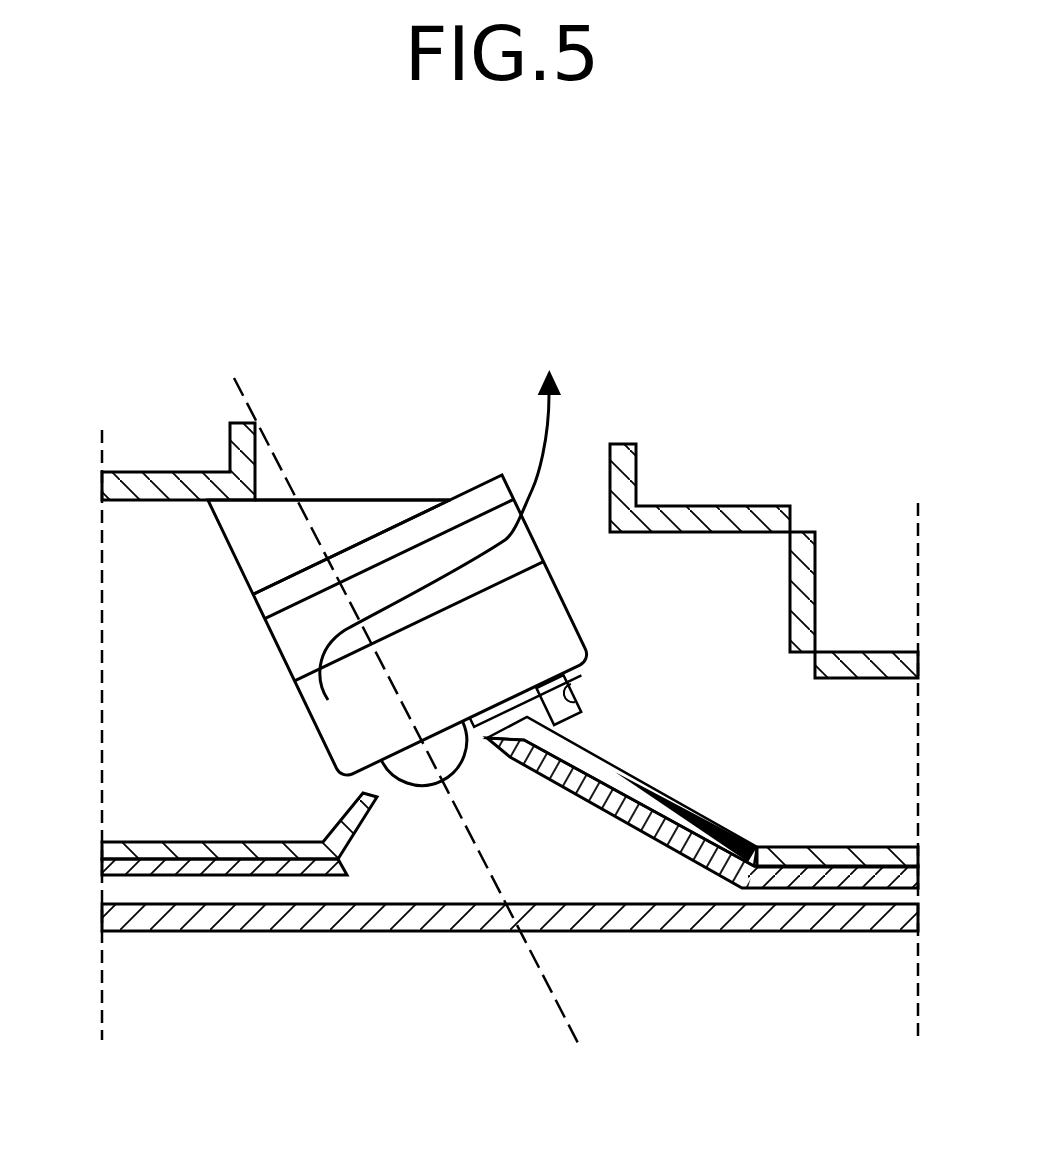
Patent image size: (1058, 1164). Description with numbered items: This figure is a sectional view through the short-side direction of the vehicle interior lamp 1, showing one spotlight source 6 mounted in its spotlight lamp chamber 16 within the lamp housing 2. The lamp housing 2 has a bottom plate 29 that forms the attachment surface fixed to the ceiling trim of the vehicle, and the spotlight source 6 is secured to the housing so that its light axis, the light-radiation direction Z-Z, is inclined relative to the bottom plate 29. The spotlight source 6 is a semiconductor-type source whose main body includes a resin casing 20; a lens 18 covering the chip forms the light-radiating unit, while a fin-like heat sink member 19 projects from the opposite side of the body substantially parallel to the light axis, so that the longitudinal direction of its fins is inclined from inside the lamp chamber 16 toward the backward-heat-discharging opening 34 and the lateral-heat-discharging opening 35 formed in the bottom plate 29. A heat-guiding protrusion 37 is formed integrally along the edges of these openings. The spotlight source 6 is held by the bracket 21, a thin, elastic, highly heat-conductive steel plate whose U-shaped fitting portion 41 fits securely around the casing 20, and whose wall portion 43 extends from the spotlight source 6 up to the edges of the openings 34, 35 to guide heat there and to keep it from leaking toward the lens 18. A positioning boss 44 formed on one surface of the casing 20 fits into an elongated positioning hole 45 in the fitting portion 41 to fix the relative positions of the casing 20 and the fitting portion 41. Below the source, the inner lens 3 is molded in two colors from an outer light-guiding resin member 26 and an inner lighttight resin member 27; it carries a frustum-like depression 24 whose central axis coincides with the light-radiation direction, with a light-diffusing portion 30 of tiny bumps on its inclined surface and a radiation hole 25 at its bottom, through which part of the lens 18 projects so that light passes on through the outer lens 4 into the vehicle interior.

The vehicle interior lamp 1 is at (826, 405).
The lamp housing 2 is at (128, 455).
The inner lens 3 is at (182, 895).
The outer lens 4 is at (258, 933).
The spotlight source 6 is at (278, 690).
The spotlight lamp chamber 16 is at (657, 605).
The lens 18 is at (424, 788).
The fin-like heat sink member 19 is at (281, 641).
The casing 20 is at (328, 752).
The bracket 21 is at (315, 463).
The depression 24 is at (702, 880).
The radiation hole 25 is at (376, 797).
The outer resin member 26 is at (793, 889).
The lighttight resin member 27 is at (853, 857).
The bottom plate 29 is at (192, 488).
The light-diffusing portion 30 is at (625, 818).
The backward-heat-discharging opening 34 is at (479, 486).
The lateral-heat-discharging opening 35 is at (612, 456).
The heat-guiding protrusion 37 is at (646, 444).
The fitting portion 41 is at (588, 673).
The wall portion 43 is at (362, 525).
The positioning boss 44 is at (583, 728).
The positioning hole 45 is at (583, 710).